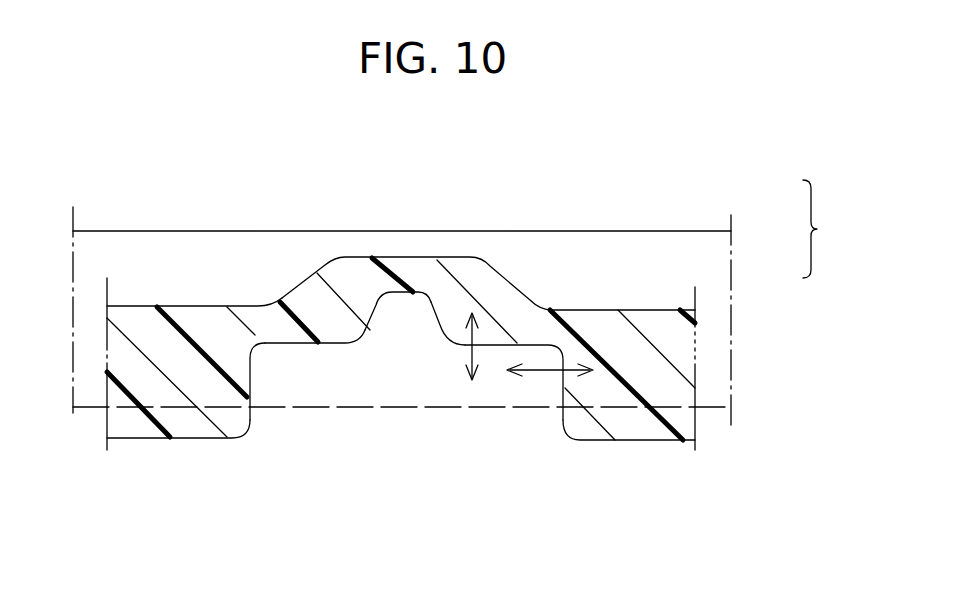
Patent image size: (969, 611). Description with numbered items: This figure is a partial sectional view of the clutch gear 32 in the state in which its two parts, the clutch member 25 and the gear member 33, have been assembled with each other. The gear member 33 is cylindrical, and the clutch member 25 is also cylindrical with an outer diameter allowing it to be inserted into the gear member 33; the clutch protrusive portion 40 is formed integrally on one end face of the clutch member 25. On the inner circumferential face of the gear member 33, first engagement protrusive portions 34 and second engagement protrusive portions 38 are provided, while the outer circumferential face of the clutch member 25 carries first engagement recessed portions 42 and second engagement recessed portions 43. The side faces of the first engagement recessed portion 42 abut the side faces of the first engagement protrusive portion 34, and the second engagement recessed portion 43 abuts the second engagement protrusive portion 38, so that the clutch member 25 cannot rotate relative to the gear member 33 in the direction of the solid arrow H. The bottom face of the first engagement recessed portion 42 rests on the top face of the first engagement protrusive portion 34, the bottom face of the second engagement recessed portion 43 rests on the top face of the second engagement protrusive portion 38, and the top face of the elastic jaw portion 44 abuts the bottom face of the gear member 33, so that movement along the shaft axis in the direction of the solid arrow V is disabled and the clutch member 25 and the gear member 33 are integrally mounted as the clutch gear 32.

The clutch member 25 is at (663, 310).
The gear member 33 is at (680, 232).
The clutch gear 32 is at (833, 229).
The clutch protrusive portion 40 is at (352, 257).
The second engagement protrusive portion 38 is at (398, 315).
The second engagement recessed portion 43 is at (426, 300).
The first engagement recessed portion 42 is at (257, 377).
The first engagement protrusive portion 34 is at (270, 362).
The elastic jaw portion 44 is at (178, 440).
The solid arrow V is at (467, 355).
The solid arrow H is at (542, 372).